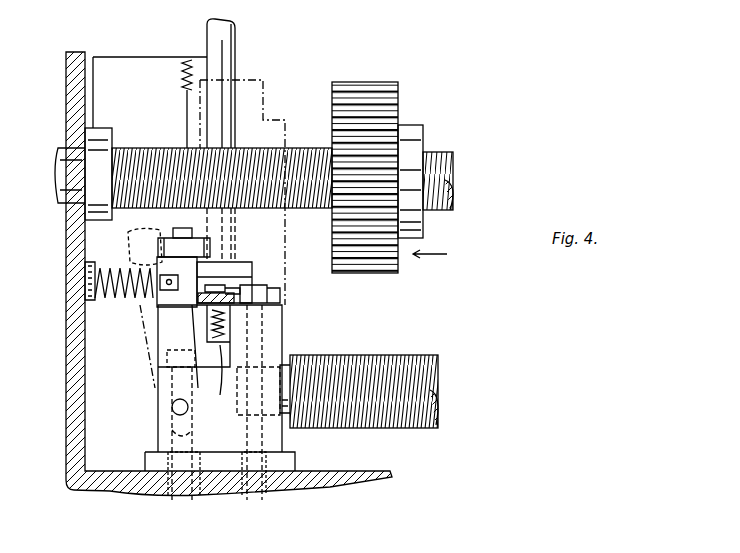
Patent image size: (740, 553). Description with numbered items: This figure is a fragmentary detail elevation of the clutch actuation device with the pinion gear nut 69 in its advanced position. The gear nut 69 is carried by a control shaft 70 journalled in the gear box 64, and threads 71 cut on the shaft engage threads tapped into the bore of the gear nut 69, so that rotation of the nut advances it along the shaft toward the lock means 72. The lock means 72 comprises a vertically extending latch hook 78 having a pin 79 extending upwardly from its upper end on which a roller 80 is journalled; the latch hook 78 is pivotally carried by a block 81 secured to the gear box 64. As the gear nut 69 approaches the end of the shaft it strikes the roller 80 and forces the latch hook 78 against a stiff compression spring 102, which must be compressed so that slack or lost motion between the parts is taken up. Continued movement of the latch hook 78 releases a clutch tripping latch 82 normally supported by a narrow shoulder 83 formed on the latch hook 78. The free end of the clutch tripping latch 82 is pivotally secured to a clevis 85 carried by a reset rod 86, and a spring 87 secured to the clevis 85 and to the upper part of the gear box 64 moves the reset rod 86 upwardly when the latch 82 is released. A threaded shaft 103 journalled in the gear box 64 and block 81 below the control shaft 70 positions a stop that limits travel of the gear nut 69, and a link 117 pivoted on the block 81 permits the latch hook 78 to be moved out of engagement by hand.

The gear box 64 is at (66, 88).
The reset rod 86 is at (236, 28).
The spring 87 is at (181, 75).
The control shaft 70 is at (452, 196).
The pinion gear nut 69 is at (404, 126).
The threads 71 is at (433, 152).
The pin 79 is at (178, 228).
The roller 80 is at (156, 247).
The clevis 85 is at (225, 263).
The latch hook 78 is at (215, 280).
The link 117 is at (248, 292).
The lock means 72 is at (298, 312).
The narrow shoulder 83 is at (207, 342).
The compression spring 102 is at (115, 306).
The block 81 is at (154, 392).
The clutch tripping latch 82 is at (206, 400).
The threaded shaft 103 is at (425, 428).